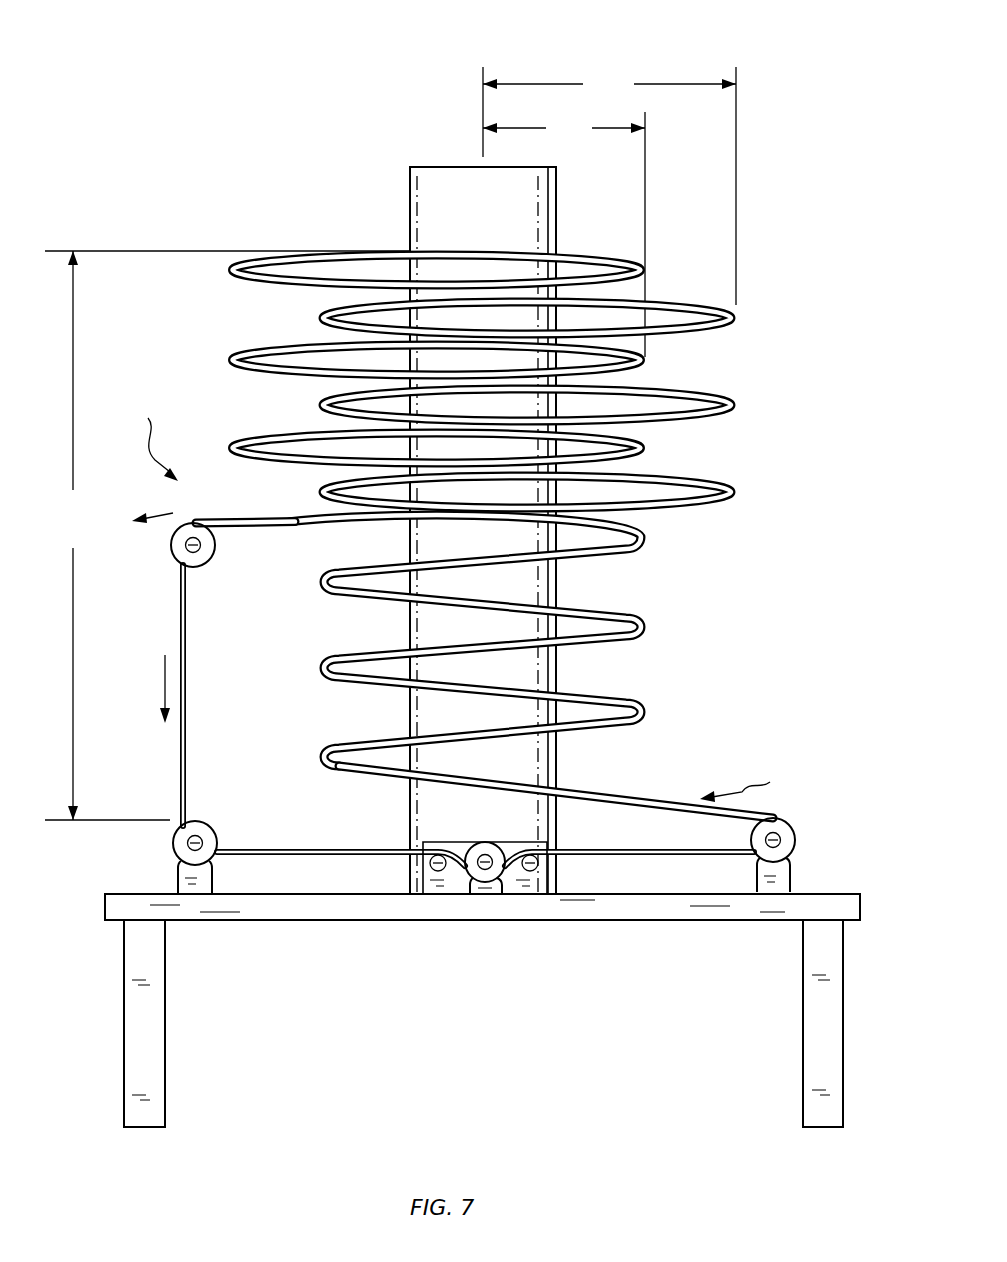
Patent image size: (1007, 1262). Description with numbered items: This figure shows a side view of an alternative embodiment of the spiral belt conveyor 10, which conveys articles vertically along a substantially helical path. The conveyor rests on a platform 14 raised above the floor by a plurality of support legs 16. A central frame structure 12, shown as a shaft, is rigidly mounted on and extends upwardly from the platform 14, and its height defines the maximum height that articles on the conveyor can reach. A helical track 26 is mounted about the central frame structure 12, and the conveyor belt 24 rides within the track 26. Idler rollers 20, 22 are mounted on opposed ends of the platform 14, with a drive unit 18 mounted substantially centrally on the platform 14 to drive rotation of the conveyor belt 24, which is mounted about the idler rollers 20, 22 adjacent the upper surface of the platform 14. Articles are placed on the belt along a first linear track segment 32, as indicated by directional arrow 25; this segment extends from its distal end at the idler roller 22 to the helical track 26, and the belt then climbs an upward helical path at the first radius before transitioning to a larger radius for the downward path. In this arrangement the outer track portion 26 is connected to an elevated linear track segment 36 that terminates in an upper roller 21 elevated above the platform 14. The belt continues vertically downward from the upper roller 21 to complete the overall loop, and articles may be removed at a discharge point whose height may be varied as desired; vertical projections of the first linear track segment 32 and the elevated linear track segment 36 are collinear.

The spiral belt conveyor 10 is at (102, 108).
The central frame structure 12 is at (432, 167).
The platform 14 is at (482, 1010).
The support legs 16 is at (166, 1060).
The drive unit 18 is at (514, 895).
The idler roller 20 is at (216, 826).
The upper roller 21 is at (206, 562).
The idler roller 22 is at (778, 826).
The conveyor belt 24 is at (318, 857).
The directional arrow 25 is at (748, 778).
The helical track 26 is at (646, 546).
The first linear track segment 32 is at (656, 797).
The elevated linear track segment 36 is at (284, 520).